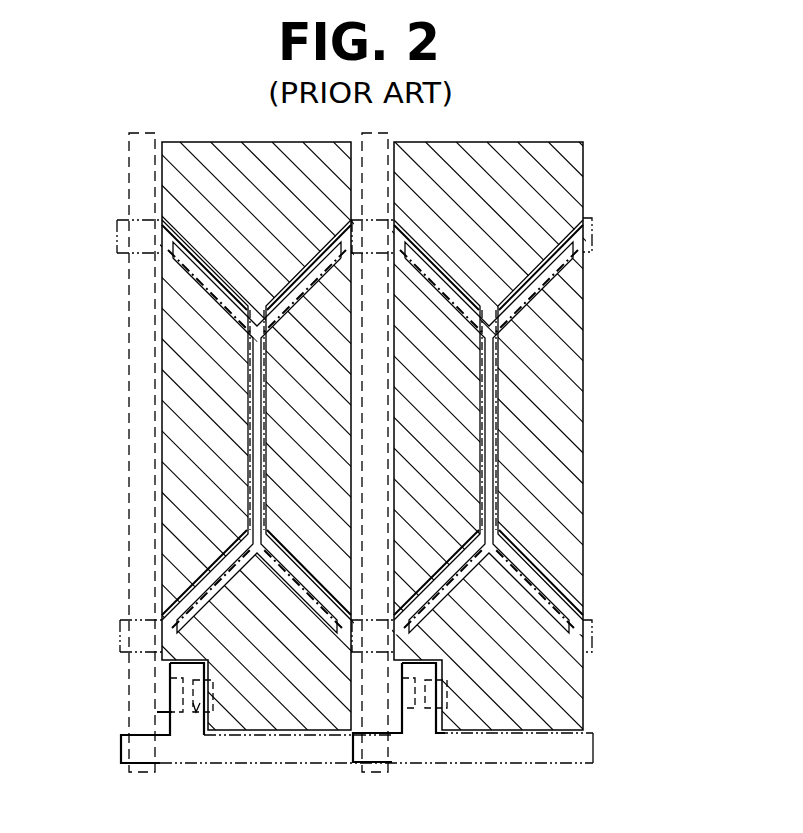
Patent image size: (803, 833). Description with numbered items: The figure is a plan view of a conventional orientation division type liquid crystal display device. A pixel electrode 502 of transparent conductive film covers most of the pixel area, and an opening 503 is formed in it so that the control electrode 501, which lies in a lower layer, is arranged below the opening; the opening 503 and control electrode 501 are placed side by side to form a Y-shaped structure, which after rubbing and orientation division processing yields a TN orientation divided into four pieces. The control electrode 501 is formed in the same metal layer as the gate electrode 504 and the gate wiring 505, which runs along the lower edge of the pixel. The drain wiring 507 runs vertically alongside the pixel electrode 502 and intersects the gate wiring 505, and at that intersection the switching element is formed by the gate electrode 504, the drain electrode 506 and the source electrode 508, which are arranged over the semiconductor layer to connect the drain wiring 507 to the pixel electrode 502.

The control electrode 501 is at (592, 235).
The pixel electrode 502 is at (563, 383).
The opening 503 is at (490, 478).
The gate electrode 504 is at (180, 672).
The gate wiring 505 is at (585, 747).
The drain electrode 506 is at (183, 698).
The drain wiring 507 is at (138, 402).
The source electrode 508 is at (194, 712).